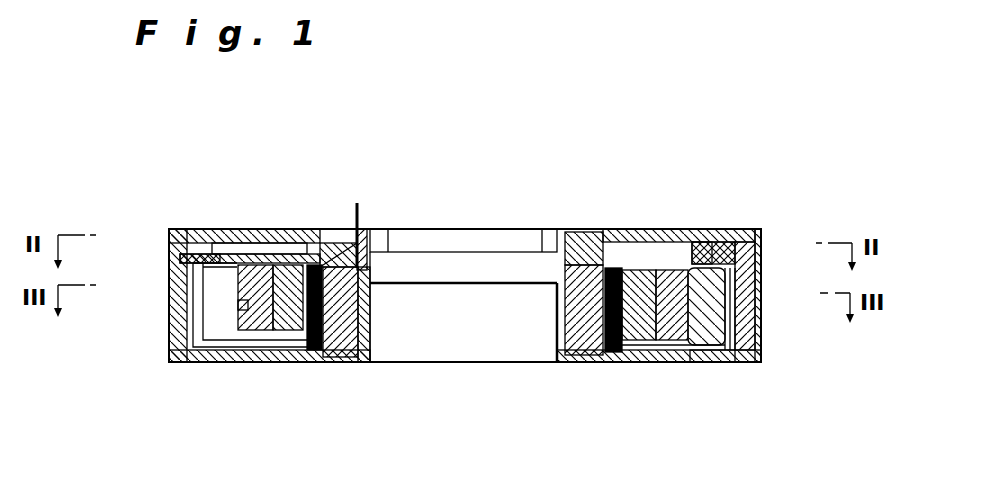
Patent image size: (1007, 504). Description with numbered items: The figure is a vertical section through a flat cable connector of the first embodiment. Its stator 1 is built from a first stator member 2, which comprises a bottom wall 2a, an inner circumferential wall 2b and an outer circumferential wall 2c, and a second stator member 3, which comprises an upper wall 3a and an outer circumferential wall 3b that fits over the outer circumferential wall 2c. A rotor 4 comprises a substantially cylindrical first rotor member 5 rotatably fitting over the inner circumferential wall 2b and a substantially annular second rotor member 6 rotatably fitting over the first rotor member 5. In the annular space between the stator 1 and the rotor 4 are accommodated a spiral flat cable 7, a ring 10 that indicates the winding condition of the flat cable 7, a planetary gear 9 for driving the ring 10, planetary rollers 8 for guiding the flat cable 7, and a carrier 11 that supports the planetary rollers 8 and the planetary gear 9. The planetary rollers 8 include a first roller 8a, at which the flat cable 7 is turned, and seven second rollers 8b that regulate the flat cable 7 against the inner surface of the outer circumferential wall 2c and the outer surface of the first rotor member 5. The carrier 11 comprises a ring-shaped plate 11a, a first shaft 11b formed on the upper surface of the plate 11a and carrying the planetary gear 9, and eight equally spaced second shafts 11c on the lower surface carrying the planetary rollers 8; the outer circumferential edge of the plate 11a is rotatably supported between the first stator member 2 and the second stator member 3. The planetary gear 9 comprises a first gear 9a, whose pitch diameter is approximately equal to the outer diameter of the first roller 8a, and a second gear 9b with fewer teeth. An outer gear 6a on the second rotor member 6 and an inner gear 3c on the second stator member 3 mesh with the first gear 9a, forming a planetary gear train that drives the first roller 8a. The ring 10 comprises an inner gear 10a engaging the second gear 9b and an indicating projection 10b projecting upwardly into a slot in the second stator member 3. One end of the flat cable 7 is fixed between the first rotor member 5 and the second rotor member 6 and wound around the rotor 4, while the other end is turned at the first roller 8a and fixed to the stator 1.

The stator 1 is at (817, 434).
The first stator member 2 is at (745, 362).
The bottom wall 2a is at (648, 352).
The inner circumferential wall 2b is at (556, 330).
The outer circumferential wall 2c is at (732, 347).
The second stator member 3 is at (765, 332).
The upper wall 3a is at (672, 230).
The outer circumferential wall 3b is at (764, 290).
The inner gear 3c is at (745, 231).
The rotor 4 is at (354, 203).
The first rotor member 5 is at (373, 221).
The second rotor member 6 is at (352, 231).
The outer gear 6a is at (575, 231).
The flat cable 7 is at (740, 320).
The planetary rollers 8 is at (423, 262).
The first roller 8a is at (635, 310).
The second rollers 8b is at (400, 298).
The planetary gear 9 is at (620, 238).
The first gear 9a is at (625, 231).
The second gear 9b is at (638, 231).
The ring 10 is at (745, 247).
The inner gear 10a is at (740, 228).
The indicating projection 10b is at (768, 242).
The carrier 11 is at (265, 229).
The ring-shaped plate 11a is at (212, 229).
The first shaft 11b is at (700, 231).
The second shafts 11c is at (242, 298).